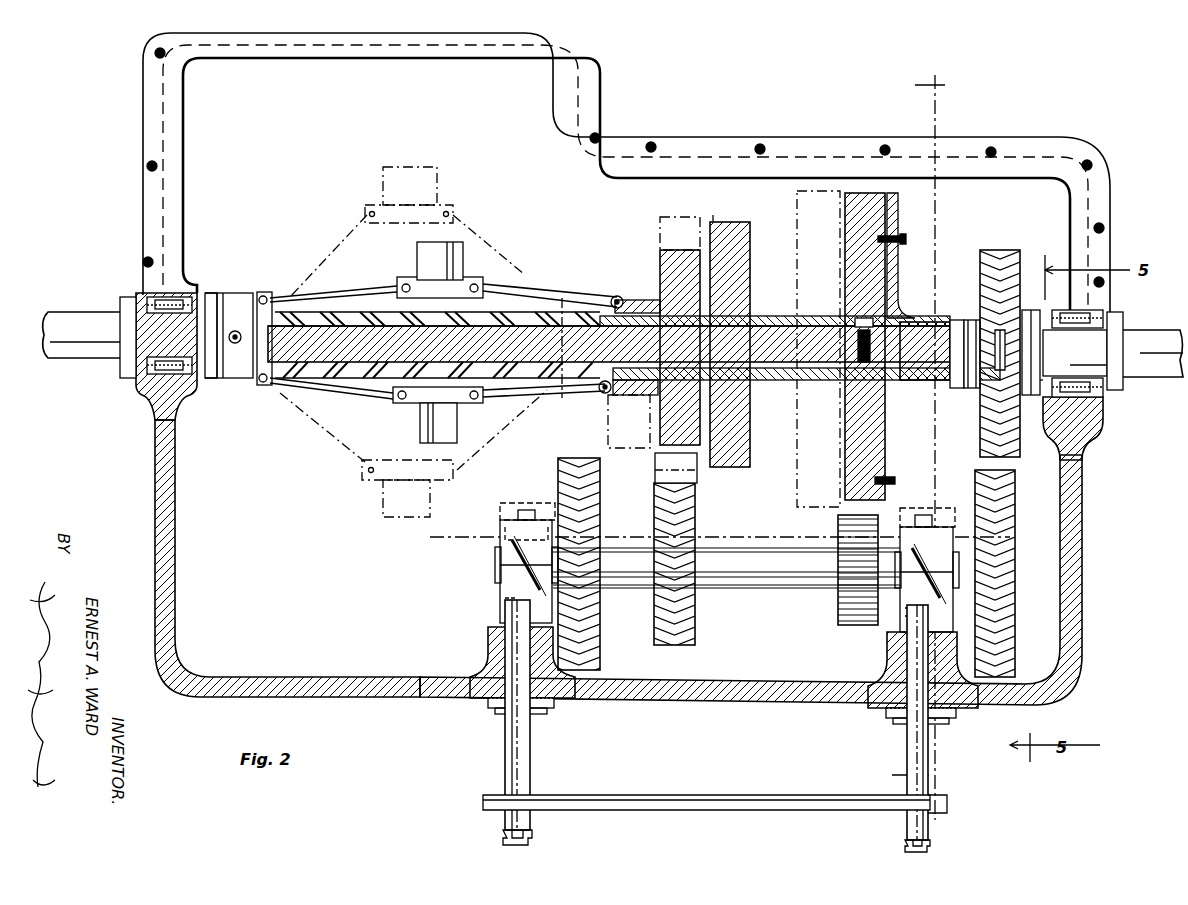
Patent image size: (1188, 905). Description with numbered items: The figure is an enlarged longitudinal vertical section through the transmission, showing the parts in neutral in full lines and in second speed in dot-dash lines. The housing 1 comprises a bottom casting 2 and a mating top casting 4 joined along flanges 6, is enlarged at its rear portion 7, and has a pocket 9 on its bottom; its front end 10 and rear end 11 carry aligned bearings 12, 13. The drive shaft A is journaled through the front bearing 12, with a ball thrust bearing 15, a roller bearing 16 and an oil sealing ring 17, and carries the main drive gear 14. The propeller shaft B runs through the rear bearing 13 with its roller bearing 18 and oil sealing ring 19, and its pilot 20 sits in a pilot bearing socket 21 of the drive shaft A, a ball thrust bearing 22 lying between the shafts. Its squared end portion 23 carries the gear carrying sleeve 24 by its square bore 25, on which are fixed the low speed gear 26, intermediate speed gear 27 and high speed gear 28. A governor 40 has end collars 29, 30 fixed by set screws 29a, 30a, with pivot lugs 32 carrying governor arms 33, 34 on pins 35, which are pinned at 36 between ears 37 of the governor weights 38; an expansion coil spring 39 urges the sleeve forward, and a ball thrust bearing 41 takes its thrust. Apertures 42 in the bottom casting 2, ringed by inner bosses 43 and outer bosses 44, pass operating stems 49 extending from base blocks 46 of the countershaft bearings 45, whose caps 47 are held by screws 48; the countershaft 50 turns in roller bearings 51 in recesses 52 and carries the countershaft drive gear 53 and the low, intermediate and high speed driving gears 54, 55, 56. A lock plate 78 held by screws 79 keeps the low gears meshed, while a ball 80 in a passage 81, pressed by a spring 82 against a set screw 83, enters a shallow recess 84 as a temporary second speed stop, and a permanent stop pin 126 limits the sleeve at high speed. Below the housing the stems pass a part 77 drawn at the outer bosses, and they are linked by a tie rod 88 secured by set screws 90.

The housing 1 is at (615, 580).
The bottom casting 2 is at (207, 500).
The top casting 4 is at (1050, 204).
The flanges 6 is at (735, 150).
The diametrically enlarged rear portion 7 is at (545, 94).
The pocket or lobe 9 is at (748, 668).
The front end of housing 10 is at (1082, 520).
The rear end of housing 11 is at (155, 450).
The front bearing 12 is at (1090, 330).
The rear bearing 13 is at (150, 297).
The main or countershaft drive gear 14 is at (995, 250).
The ball thrust bearing 15 is at (1034, 310).
The roller bearing 16 is at (1080, 310).
The oil sealing ring 17 is at (1100, 400).
The roller bearing 18 is at (175, 297).
The oil sealing ring 19 is at (137, 395).
The reduced pilot or stem 20 is at (972, 320).
The pilot bearing socket 21 is at (975, 400).
The ball thrust bearing 22 is at (955, 320).
The squared inner end portion 23 is at (545, 290).
The gear carrying sleeve 24 is at (768, 326).
The square bore 25 is at (772, 380).
The low speed gear 26 is at (858, 192).
The intermediate speed gear 27 is at (720, 222).
The high speed gear 28 is at (665, 250).
The end collar 29 is at (638, 395).
The set screw 29a is at (638, 300).
The end collar 30 is at (240, 378).
The set screw 30a is at (237, 330).
The pivot lugs or ears 32 is at (268, 292).
The governor arm 33 is at (590, 300).
The governor arm 34 is at (350, 308).
The pins 35 is at (262, 296).
The pins 36 is at (470, 417).
The ears 37 is at (425, 280).
The governor weights 38 is at (438, 248).
The expansion coil spring 39 is at (335, 412).
The governor 40 is at (500, 280).
The ball thrust bearing 41 is at (212, 378).
The apertures 42 is at (553, 700).
The inner bosses 43 is at (488, 650).
The outer bosses 44 is at (488, 716).
The countershaft bearings 45 is at (487, 606).
The base blocks 46 is at (500, 618).
The caps 47 is at (500, 543).
The screws 48 is at (527, 510).
The operating stems or rods 49 is at (530, 760).
The countershaft 50 is at (768, 548).
The roller bearings 51 is at (490, 596).
The recesses 52 is at (500, 527).
The countershaft drive gear 53 is at (1020, 493).
The low speed driving gear 54 is at (838, 603).
The intermediate speed driving gear 55 is at (695, 620).
The high speed driving gear 56 is at (600, 500).
The nut 77 is at (498, 716).
The circular lock plate 78 is at (898, 250).
The screws 79 is at (906, 239).
The ball 80 is at (825, 412).
The passage 81 is at (820, 375).
The expansion coil spring 82 is at (858, 332).
The set screw 83 is at (858, 318).
The shallow recess 84 is at (915, 380).
The tie rod 88 is at (740, 795).
The set screws 90 is at (532, 838).
The permanent stop pin 126 is at (562, 400).
The drive shaft A is at (1155, 372).
The propeller shaft B is at (75, 358).